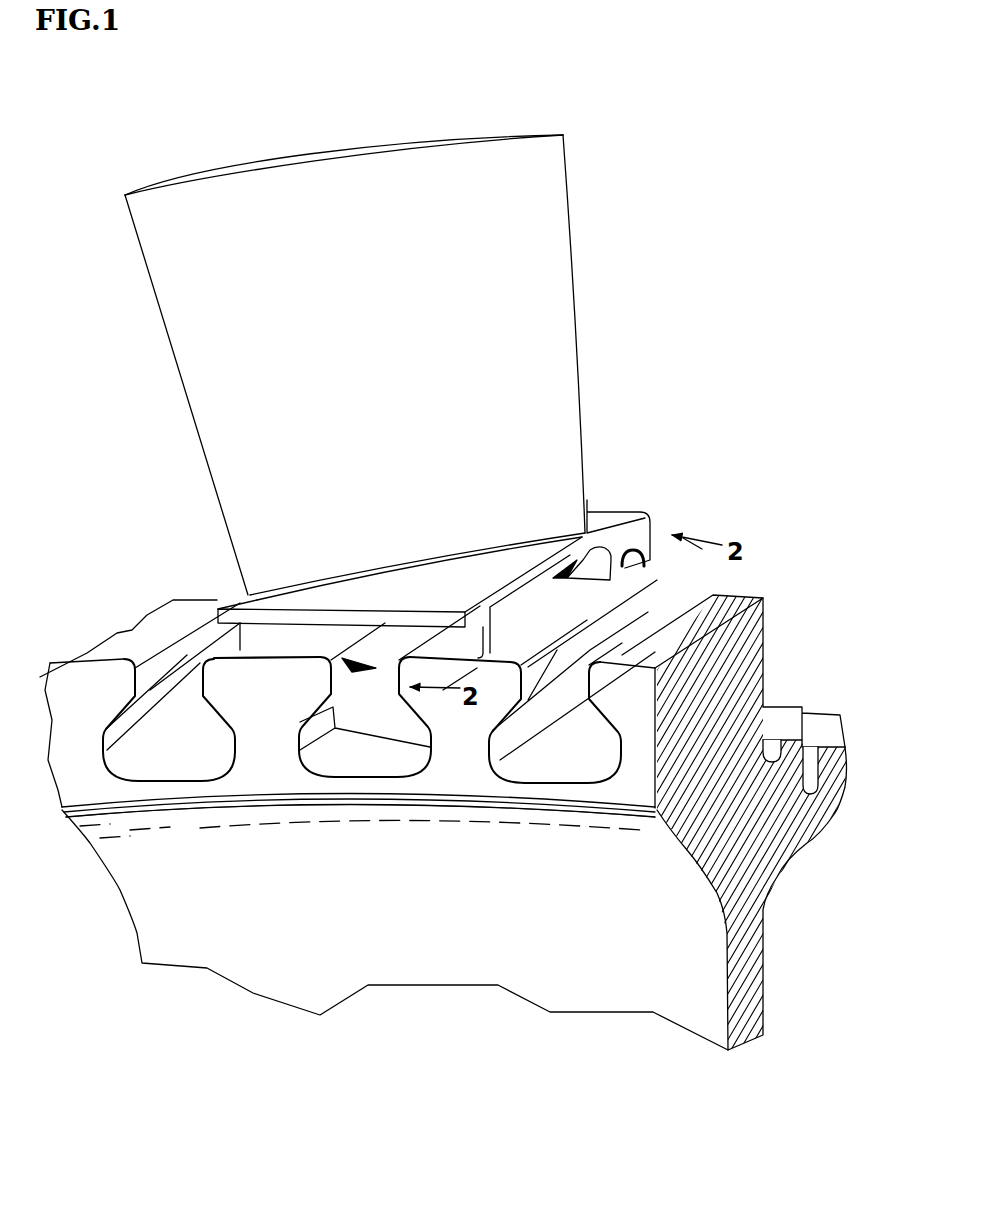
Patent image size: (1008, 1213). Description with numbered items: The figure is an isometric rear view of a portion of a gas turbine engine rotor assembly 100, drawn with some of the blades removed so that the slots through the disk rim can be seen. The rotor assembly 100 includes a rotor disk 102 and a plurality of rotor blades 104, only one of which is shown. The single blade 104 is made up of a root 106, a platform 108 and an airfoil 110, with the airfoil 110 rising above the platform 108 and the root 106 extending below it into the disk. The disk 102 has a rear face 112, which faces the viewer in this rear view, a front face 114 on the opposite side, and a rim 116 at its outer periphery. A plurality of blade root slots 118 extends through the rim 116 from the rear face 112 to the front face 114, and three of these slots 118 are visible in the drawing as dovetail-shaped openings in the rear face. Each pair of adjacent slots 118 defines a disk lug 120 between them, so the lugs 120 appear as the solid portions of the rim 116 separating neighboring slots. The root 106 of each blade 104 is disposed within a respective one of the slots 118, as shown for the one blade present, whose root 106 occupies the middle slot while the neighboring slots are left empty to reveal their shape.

The gas turbine engine rotor assembly 100 is at (84, 268).
The rotor disk 102 is at (438, 973).
The rotor blade 104 is at (403, 401).
The root 106 is at (387, 720).
The platform 108 is at (603, 513).
The airfoil 110 is at (540, 228).
The rear face 112 is at (117, 796).
The front face 114 is at (207, 600).
The rim 116 is at (183, 620).
The blade root slot 118 is at (188, 763).
The disk lug 120 is at (272, 705).